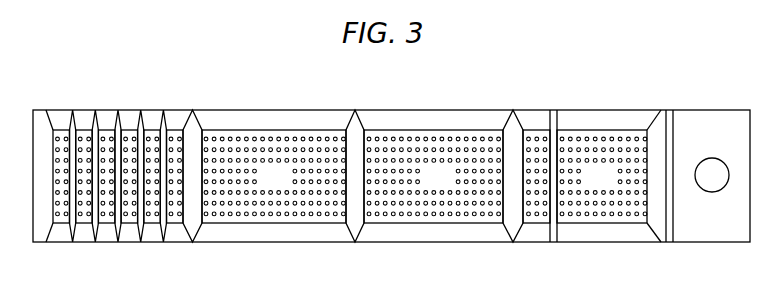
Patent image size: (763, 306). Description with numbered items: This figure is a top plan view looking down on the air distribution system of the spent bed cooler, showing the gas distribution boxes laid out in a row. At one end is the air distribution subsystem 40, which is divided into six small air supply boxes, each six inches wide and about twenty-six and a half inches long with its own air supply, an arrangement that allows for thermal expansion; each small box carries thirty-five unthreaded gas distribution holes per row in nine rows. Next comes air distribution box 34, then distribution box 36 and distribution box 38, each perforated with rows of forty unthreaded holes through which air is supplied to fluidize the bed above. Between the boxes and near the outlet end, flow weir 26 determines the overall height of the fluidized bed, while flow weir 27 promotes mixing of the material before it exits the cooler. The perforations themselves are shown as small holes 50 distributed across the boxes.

The flow weir 26 is at (661, 126).
The flow weir 27 is at (558, 120).
The air distribution box 34 is at (284, 187).
The distribution box 36 is at (448, 187).
The distribution box 38 is at (609, 187).
The air distribution subsystem 40 is at (146, 91).
The perforations (holes) 50 is at (88, 139).